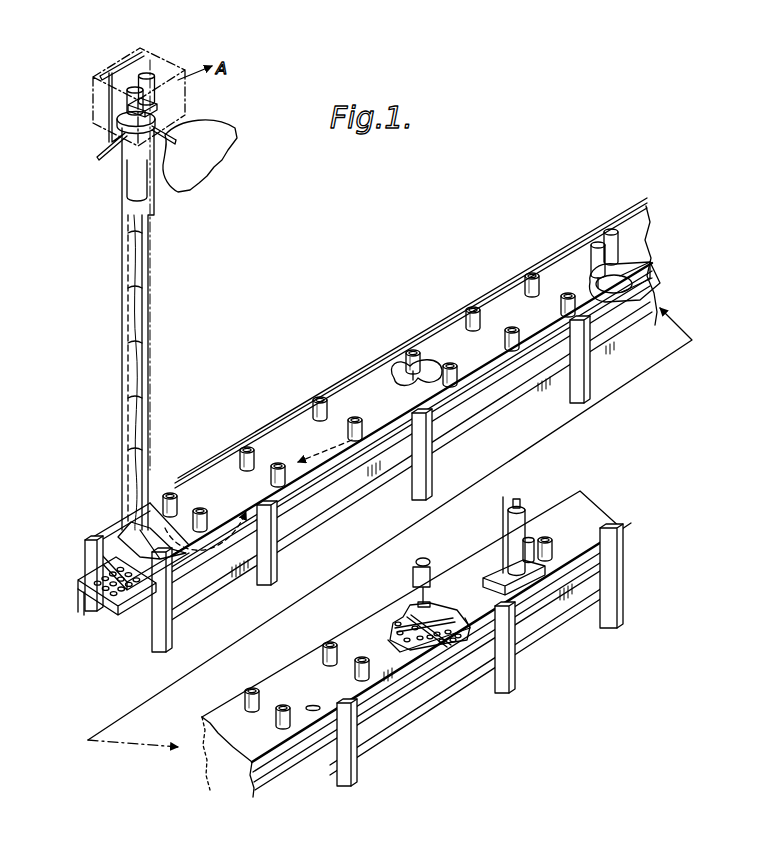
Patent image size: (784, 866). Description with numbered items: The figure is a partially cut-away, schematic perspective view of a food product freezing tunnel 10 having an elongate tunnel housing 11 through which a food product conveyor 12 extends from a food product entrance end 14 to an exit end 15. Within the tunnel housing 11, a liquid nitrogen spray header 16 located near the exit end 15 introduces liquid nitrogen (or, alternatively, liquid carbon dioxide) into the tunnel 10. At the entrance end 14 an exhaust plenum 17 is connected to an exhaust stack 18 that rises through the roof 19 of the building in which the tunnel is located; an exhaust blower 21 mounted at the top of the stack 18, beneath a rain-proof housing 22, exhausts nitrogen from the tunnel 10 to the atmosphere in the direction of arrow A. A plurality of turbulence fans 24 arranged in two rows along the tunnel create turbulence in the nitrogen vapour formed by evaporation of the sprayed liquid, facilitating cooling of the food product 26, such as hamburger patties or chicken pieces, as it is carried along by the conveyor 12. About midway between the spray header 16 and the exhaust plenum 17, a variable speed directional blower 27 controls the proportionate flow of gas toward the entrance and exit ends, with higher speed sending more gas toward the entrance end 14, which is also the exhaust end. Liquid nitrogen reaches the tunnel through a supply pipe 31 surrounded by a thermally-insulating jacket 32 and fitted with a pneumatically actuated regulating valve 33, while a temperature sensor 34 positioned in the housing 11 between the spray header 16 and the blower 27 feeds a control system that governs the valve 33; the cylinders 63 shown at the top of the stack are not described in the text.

The food product freezing tunnel 10 is at (225, 690).
The tunnel housing 11 is at (492, 402).
The food product conveyor 12 is at (118, 594).
The food product entrance end 14 is at (103, 563).
The exit end 15 is at (628, 538).
The liquid nitrogen spray header 16 is at (408, 606).
The exhaust plenum 17 is at (150, 537).
The exhaust stack 18 is at (145, 382).
The roof 19 is at (223, 128).
The exhaust blower 21 is at (156, 113).
The rain-proof housing 22 is at (141, 48).
The turbulence fans 24 is at (444, 370).
The food product 26 is at (131, 588).
The variable speed directional blower 27 is at (622, 270).
The liquid nitrogen supply pipe 31 is at (518, 500).
The thermally-insulating jacket 32 is at (522, 560).
The pneumatically actuated regulating valve 33 is at (428, 560).
The temperature sensor 34 is at (315, 714).
The cylinders 63 is at (155, 72).